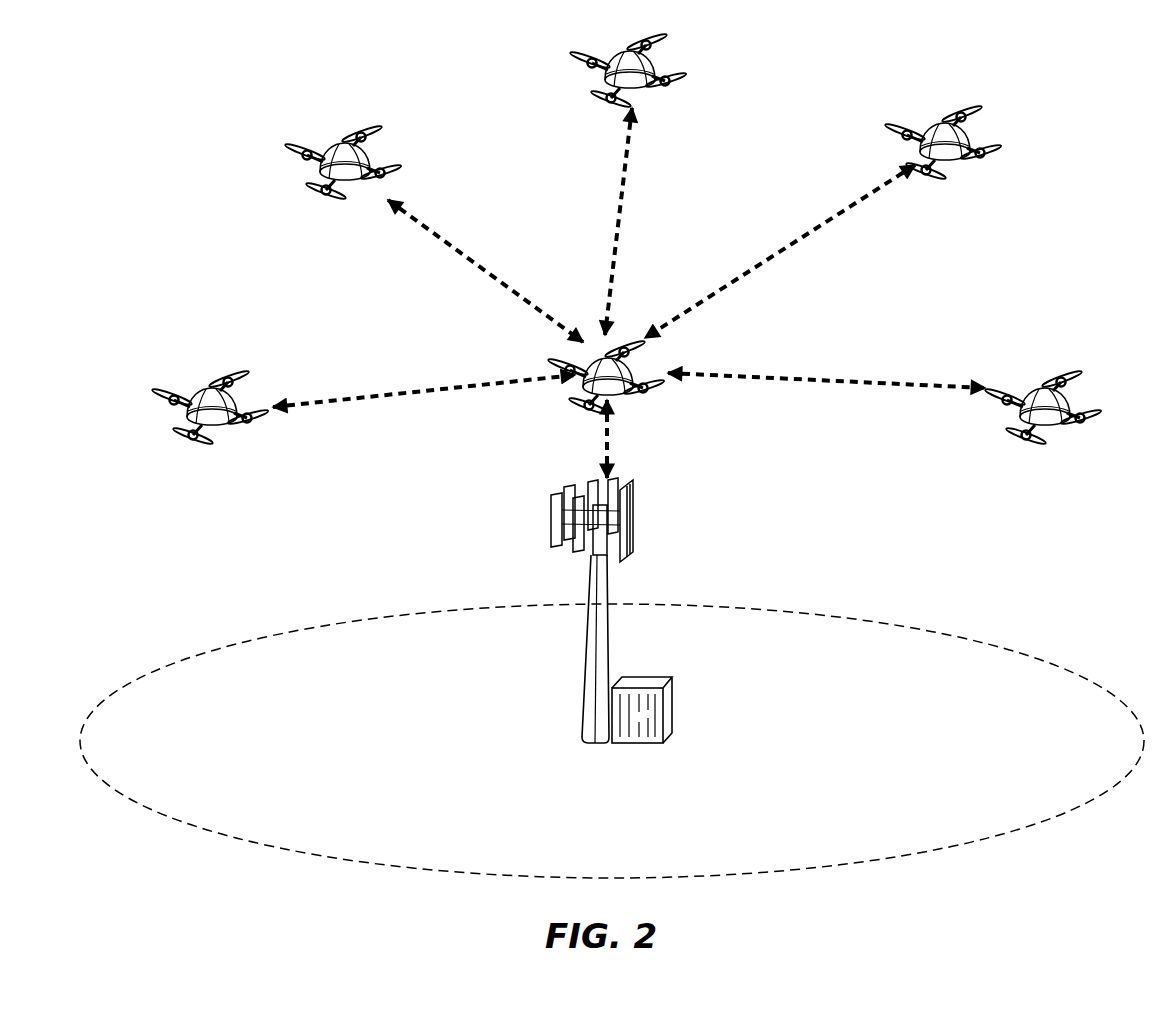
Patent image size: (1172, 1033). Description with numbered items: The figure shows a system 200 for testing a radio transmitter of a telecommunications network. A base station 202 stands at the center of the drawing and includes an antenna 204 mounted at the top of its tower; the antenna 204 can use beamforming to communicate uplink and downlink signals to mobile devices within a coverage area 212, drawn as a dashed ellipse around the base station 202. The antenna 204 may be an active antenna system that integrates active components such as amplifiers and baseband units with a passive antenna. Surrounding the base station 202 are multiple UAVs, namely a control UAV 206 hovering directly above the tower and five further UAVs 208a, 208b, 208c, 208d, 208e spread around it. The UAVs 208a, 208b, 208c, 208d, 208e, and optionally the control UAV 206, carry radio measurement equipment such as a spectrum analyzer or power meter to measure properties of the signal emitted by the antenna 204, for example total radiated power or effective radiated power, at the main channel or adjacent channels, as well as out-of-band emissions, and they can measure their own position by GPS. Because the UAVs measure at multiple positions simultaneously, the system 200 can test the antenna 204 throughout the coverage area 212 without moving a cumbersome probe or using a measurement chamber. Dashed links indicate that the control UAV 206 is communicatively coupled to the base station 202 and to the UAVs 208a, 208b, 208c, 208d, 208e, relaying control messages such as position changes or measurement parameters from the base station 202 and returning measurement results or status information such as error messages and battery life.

The system 200 is at (1104, 145).
The base station 202 is at (585, 668).
The antenna 204 is at (556, 520).
The control UAV 206 is at (643, 392).
The UAV 208a is at (192, 373).
The UAV 208b is at (318, 140).
The UAV 208c is at (587, 54).
The UAV 208d is at (925, 128).
The UAV 208e is at (1052, 384).
The coverage area 212 is at (173, 820).